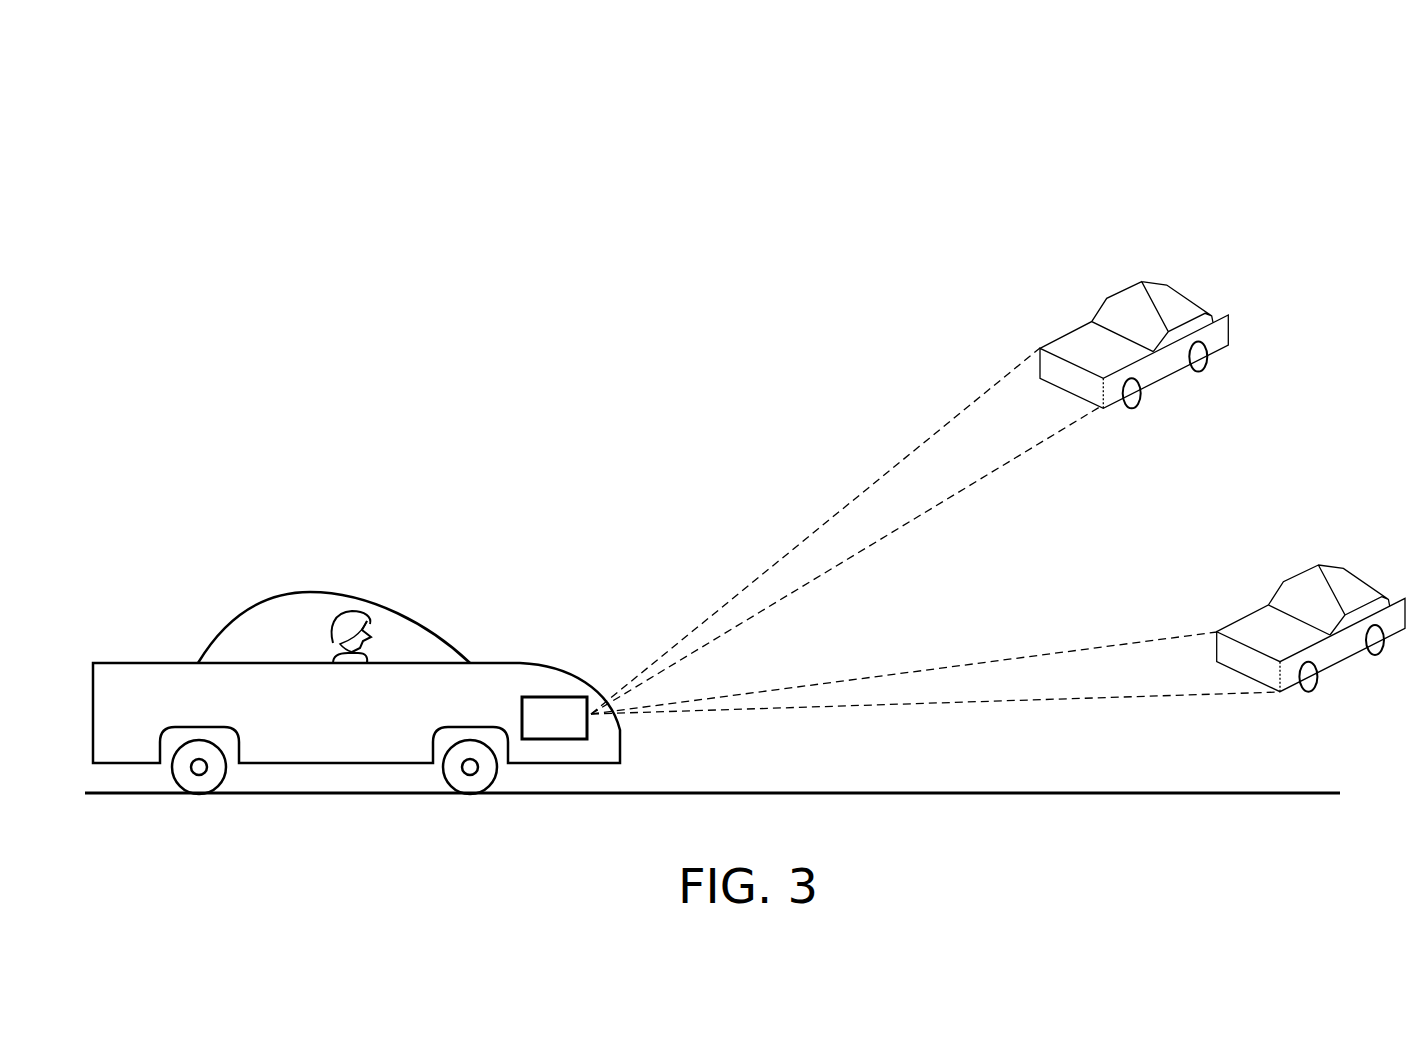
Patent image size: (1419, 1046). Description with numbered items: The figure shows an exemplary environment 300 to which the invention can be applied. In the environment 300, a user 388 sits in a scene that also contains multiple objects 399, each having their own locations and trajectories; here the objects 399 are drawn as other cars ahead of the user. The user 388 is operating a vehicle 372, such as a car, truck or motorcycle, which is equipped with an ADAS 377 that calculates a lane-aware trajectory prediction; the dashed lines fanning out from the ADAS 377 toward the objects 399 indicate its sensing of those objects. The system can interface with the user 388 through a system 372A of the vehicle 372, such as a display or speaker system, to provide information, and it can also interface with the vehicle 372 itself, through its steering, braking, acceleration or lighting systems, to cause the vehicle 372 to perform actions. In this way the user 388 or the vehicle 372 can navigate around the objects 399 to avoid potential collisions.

The environment 300 is at (197, 54).
The vehicle 372 is at (374, 717).
The system 372A is at (456, 650).
The ADAS 377 is at (478, 827).
The user 388 is at (310, 629).
The objects 399 is at (1112, 270).